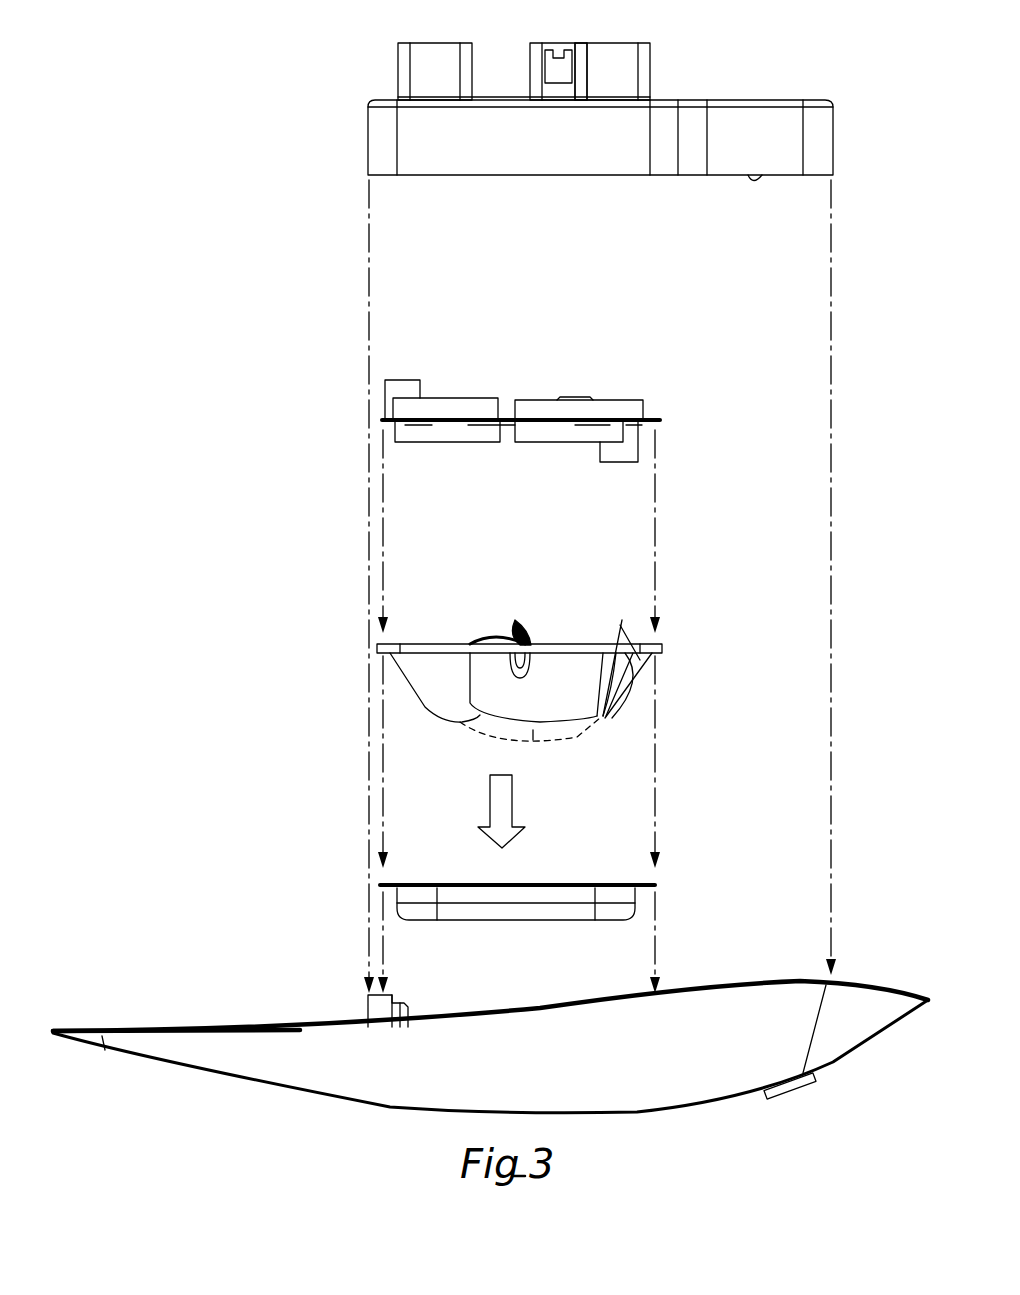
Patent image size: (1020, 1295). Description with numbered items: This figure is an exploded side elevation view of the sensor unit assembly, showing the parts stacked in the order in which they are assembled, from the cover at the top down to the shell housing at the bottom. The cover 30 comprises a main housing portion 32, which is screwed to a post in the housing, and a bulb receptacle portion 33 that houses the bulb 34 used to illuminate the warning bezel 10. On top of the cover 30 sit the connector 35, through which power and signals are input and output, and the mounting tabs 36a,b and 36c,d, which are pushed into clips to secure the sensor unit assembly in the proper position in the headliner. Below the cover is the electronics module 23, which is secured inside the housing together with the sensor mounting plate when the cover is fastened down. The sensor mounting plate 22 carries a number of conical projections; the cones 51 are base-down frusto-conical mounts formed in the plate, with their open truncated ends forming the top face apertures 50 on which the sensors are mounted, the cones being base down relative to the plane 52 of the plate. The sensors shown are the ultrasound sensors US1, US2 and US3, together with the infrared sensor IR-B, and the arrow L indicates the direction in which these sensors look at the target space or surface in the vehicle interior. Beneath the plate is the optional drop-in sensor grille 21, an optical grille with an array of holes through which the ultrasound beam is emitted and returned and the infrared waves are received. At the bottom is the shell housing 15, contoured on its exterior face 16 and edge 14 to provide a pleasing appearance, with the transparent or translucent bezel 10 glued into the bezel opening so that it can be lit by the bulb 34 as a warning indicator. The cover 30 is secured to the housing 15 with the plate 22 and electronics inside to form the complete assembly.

The bezel 10 is at (794, 1090).
The edge 14 is at (267, 1027).
The shell housing 15 is at (158, 1016).
The exterior face 16 is at (480, 1084).
The drop-in grille unit 21 is at (640, 903).
The sensor mounting plate 22 is at (655, 682).
The circuit board 23 is at (660, 421).
The cover 30 is at (544, 184).
The main housing portion 32 is at (522, 153).
The bulb receptacle portion 33 is at (775, 154).
The bulb 34 is at (760, 182).
The connector 35 is at (548, 48).
The tabs 36a,b is at (428, 48).
The tabs 36c,d is at (607, 48).
The top truncated plane 50 is at (530, 743).
The cones 51 is at (622, 650).
The plane of the plate 52 is at (557, 650).
The ultrasound sensor 1 US1 is at (430, 710).
The ultrasound sensor 2 US2 is at (570, 712).
The ultrasound sensor 3 US3 is at (645, 682).
The infrared sensor B IR-B is at (607, 720).
The arrow L is at (503, 816).